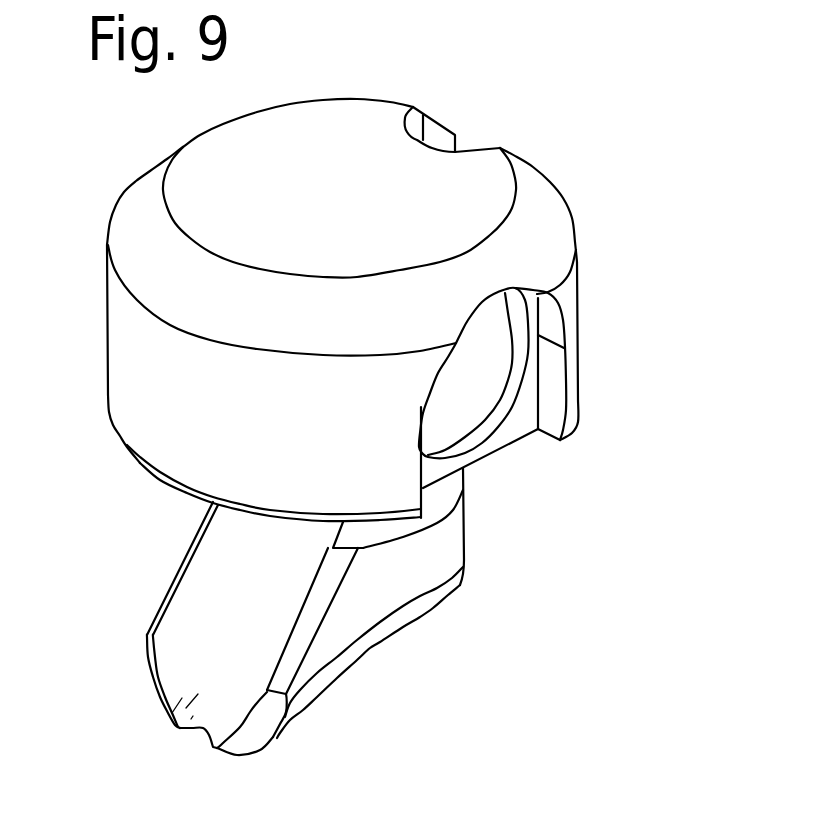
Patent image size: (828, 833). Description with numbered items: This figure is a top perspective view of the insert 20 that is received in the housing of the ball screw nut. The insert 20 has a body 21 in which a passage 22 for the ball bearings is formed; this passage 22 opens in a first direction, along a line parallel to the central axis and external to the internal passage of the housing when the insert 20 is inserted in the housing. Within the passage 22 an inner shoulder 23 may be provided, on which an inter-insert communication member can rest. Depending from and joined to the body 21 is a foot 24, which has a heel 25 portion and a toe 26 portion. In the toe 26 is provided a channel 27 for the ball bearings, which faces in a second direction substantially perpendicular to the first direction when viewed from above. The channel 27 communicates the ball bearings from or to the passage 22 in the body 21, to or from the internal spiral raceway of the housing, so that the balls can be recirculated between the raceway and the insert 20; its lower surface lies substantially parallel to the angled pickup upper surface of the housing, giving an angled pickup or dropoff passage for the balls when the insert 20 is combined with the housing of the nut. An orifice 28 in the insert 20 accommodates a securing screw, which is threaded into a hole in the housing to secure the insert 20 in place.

The insert 20 is at (172, 126).
The body 21 is at (108, 347).
The passage 22 is at (468, 378).
The inner shoulder 23 is at (531, 315).
The foot 24 is at (372, 647).
The heel 25 is at (462, 584).
The toe 26 is at (277, 740).
The channel 27 is at (214, 720).
The orifice 28 is at (471, 124).